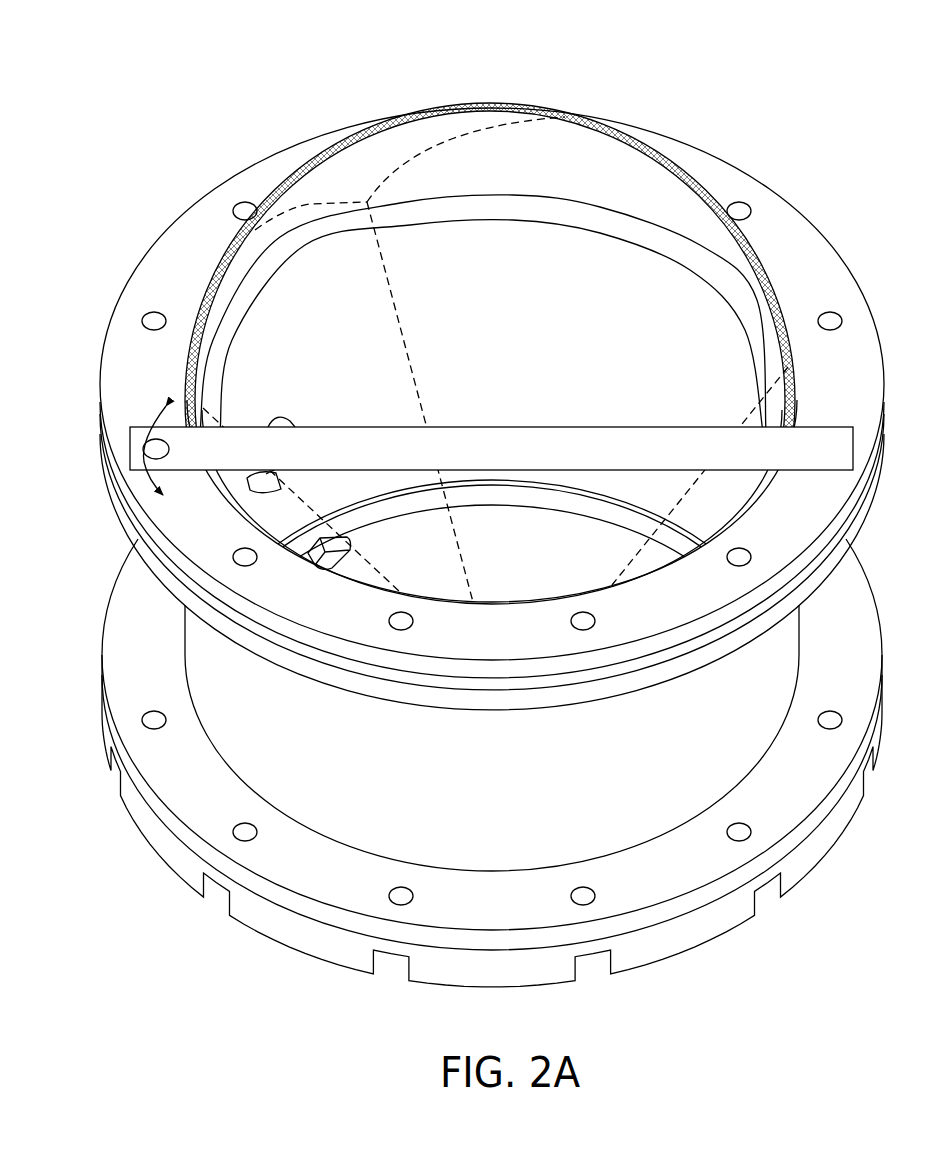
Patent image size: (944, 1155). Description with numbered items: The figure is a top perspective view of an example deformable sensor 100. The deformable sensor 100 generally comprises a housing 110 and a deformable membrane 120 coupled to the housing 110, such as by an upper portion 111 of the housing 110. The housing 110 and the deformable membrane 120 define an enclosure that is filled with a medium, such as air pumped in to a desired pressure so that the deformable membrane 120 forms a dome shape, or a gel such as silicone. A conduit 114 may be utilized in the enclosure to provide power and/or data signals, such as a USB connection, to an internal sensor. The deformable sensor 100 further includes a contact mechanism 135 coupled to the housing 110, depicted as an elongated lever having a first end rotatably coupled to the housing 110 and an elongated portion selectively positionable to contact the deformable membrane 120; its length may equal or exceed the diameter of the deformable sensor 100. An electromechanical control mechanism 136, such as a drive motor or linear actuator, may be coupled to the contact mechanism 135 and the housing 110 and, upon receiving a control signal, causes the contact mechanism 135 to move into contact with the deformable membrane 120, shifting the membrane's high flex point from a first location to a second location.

The deformable sensor 100 is at (286, 98).
The housing 110 is at (112, 276).
The upper portion 111 is at (180, 233).
The conduit 114 is at (289, 427).
The deformable membrane 120 is at (560, 141).
The contact mechanism 135 is at (843, 428).
The electromechanical control mechanism 136 is at (170, 450).